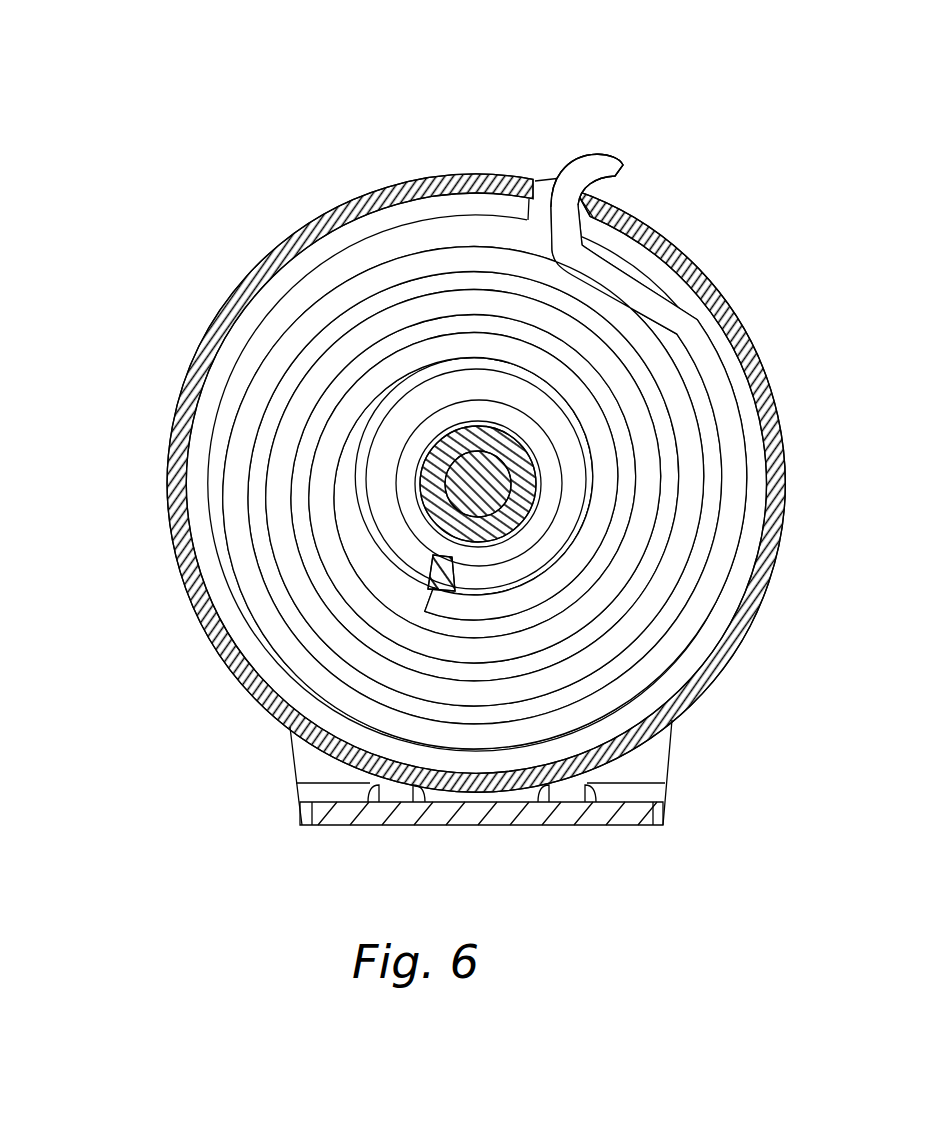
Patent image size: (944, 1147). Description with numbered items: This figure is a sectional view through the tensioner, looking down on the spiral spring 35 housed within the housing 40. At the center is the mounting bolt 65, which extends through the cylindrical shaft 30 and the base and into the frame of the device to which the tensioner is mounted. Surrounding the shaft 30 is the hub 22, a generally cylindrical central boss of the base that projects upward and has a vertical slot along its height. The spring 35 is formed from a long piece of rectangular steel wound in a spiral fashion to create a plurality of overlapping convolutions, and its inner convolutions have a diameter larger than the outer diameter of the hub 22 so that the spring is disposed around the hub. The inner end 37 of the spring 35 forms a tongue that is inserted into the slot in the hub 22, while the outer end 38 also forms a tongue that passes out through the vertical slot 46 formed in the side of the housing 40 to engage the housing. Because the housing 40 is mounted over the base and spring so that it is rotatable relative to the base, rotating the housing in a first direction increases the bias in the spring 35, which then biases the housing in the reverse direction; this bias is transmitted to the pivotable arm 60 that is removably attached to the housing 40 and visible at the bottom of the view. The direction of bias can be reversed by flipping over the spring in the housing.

The hub 22 is at (418, 553).
The shaft 30 is at (505, 526).
The spring 35 is at (693, 333).
The inner end 37 is at (443, 576).
The outer end 38 is at (600, 165).
The housing 40 is at (263, 275).
The slot 46 is at (590, 193).
The arm 60 is at (612, 812).
The mounting bolt 65 is at (507, 490).